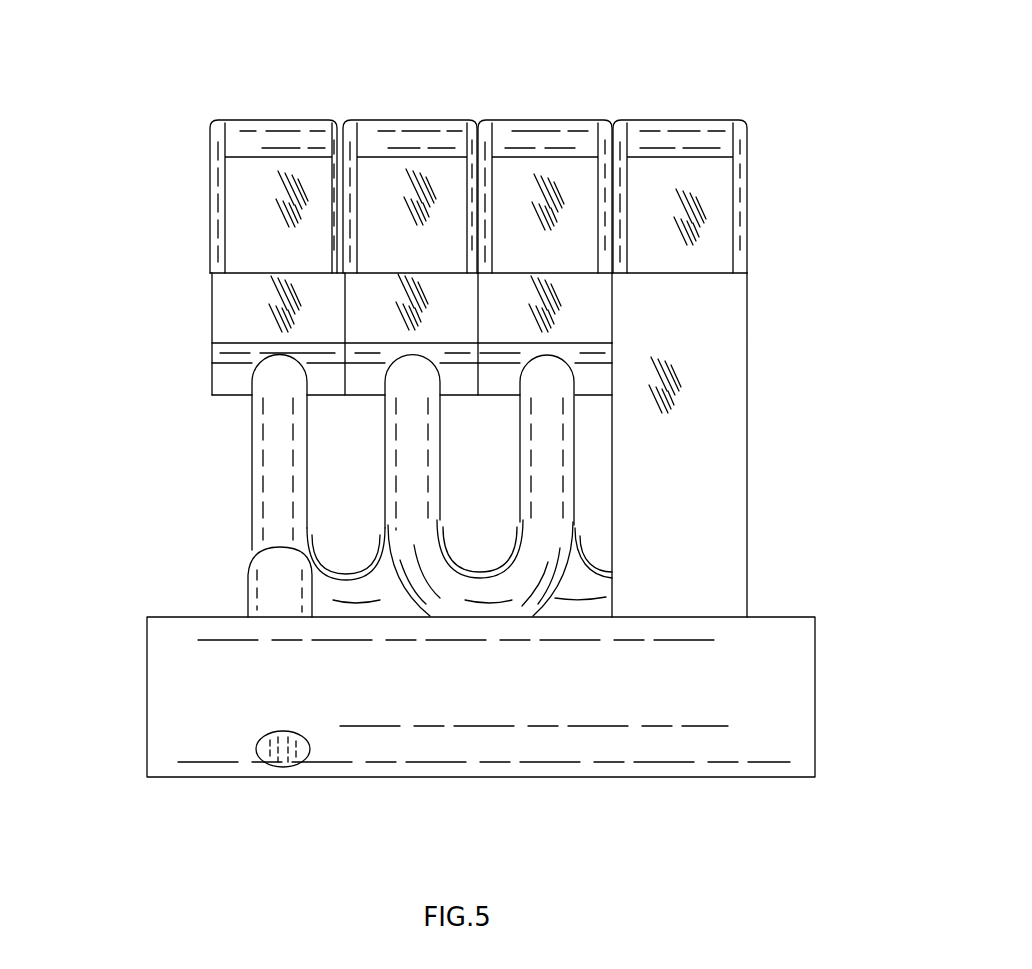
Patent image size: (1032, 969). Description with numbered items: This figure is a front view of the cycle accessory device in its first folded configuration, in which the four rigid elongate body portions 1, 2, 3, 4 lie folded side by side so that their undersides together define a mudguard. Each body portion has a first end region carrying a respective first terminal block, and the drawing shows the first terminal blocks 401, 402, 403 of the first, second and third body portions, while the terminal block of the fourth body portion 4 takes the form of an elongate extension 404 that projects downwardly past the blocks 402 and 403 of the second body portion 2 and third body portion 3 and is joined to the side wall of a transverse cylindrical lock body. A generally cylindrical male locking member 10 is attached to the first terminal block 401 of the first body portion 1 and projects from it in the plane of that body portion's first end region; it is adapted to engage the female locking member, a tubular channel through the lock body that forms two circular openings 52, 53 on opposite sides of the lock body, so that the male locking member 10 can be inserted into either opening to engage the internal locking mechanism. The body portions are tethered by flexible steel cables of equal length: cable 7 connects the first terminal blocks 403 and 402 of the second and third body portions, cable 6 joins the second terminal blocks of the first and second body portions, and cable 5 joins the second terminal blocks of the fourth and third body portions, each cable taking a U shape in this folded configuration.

The first body portion 1 is at (287, 120).
The second body portion 2 is at (428, 118).
The third body portion 3 is at (568, 118).
The fourth body portion 4 is at (705, 118).
The first terminal block 401 is at (240, 325).
The first terminal block 402 is at (377, 297).
The first terminal block 403 is at (598, 312).
The elongate extension 404 is at (678, 450).
The male locking member 10 is at (290, 468).
The flexible steel cable 7 is at (543, 507).
The flexible steel cable 6 is at (377, 588).
The flexible steel cable 5 is at (588, 595).
The circular opening 52 is at (278, 617).
The circular opening 53 is at (283, 762).